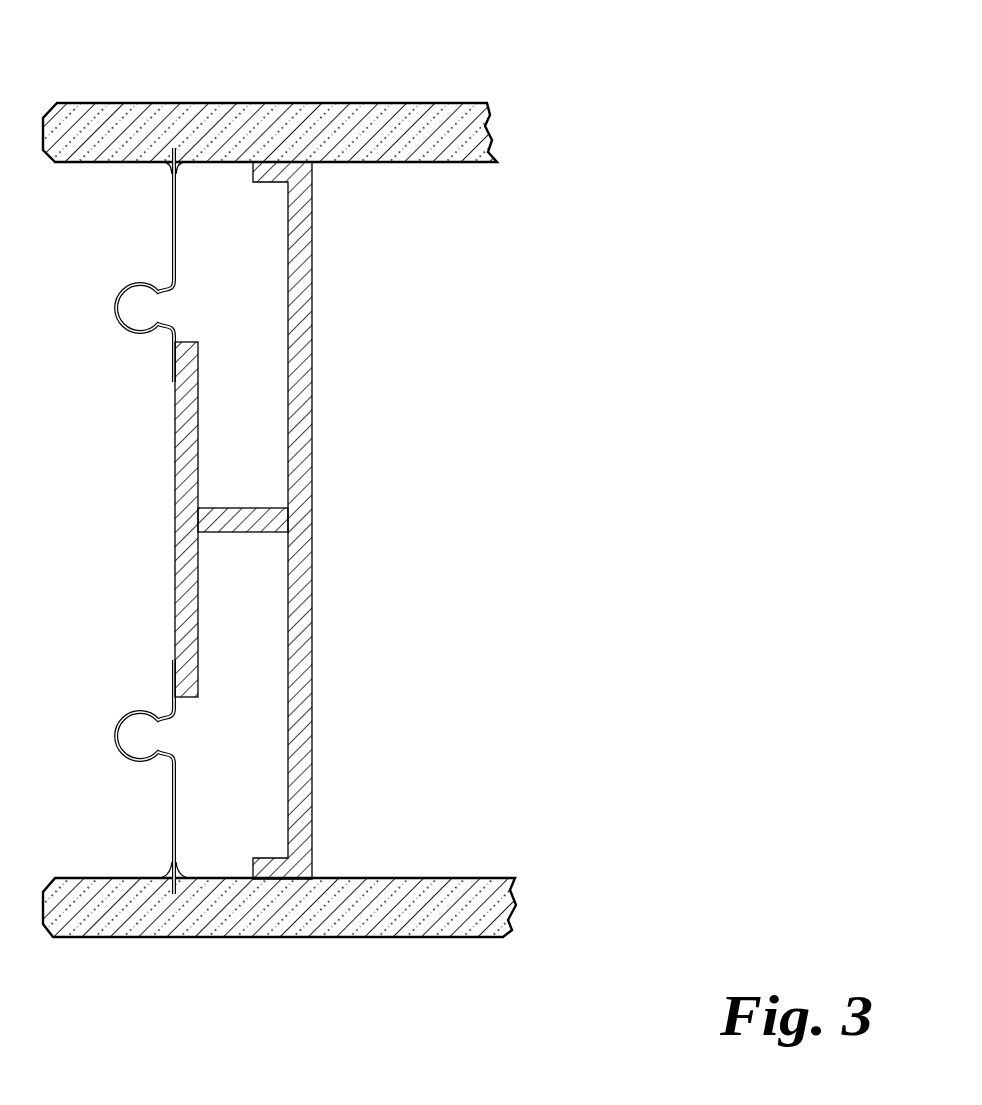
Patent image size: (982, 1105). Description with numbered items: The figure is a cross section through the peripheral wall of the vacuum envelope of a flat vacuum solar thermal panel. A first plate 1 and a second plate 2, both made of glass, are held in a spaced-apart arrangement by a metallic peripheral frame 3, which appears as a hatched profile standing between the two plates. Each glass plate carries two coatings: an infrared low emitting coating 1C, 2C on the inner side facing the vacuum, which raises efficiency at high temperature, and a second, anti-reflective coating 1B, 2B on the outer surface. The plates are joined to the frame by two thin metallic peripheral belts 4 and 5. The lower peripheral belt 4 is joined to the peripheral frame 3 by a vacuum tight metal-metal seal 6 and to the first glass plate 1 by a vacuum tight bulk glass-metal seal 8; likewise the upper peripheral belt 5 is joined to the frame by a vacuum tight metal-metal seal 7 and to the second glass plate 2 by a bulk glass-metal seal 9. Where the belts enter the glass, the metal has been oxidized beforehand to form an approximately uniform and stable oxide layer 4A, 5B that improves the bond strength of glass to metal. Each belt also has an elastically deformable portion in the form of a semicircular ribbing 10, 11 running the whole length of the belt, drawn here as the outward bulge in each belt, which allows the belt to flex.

The first plate 1 is at (392, 910).
The second coating 1B is at (480, 938).
The infrared low emitting coating 1C is at (500, 877).
The second plate 2 is at (402, 126).
The second coating 2B is at (468, 103).
The infrared low emitting coating 2C is at (485, 161).
The metallic peripheral frame 3 is at (166, 520).
The peripheral belt 4 is at (173, 803).
The oxide layer 4A is at (182, 878).
The peripheral belt 5 is at (173, 232).
The oxide layer 5B is at (179, 164).
The vacuum tight metal-metal seal 6 is at (173, 681).
The vacuum tight metal-metal seal 7 is at (173, 372).
The vacuum tight bulk glass-metal seal 8 is at (152, 869).
The vacuum tight bulk glass-metal seal 9 is at (158, 170).
The ribbing 10 is at (150, 728).
The upper bulge 11 is at (149, 304).